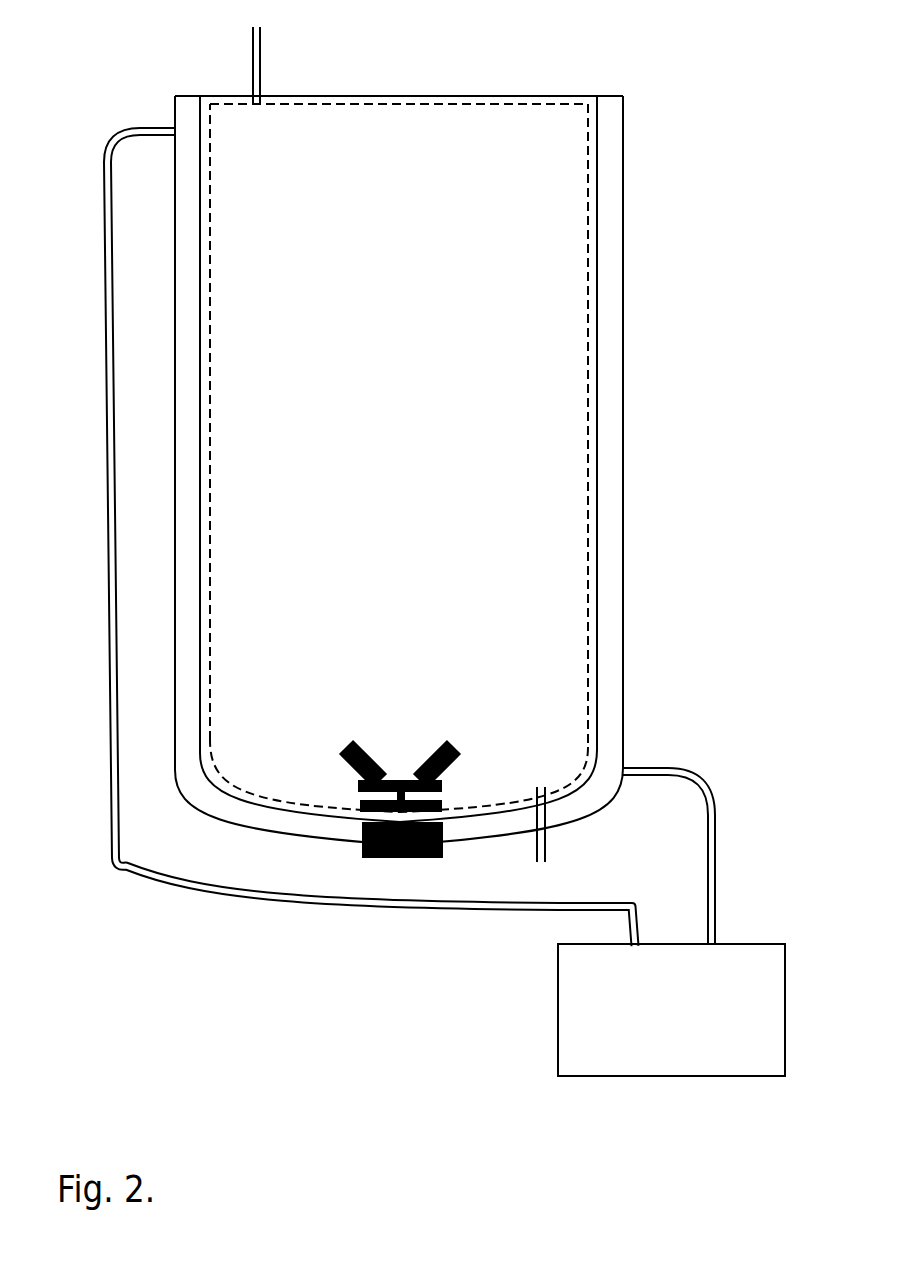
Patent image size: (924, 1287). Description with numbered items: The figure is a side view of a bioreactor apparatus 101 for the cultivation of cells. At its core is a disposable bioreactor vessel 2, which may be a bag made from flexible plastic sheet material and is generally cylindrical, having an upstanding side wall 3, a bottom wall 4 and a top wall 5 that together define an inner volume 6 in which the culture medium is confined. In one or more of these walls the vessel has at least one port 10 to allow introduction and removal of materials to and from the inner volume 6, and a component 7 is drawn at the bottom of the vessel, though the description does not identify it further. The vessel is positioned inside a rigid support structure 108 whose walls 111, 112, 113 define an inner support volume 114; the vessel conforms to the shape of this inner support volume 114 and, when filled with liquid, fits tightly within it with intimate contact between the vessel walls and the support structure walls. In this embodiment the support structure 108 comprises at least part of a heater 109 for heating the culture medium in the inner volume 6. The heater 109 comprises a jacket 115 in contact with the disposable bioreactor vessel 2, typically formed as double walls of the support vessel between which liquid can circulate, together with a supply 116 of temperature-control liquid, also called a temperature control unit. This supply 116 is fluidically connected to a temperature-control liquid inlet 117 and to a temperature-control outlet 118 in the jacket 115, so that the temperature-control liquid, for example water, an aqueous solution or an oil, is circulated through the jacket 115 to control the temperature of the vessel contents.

The disposable bioreactor vessel 2 is at (455, 439).
The side wall 3 is at (589, 607).
The bottom wall 4 is at (242, 780).
The top wall 5 is at (418, 100).
The inner volume 6 is at (399, 455).
The sensor 7 is at (408, 782).
The port 10 is at (258, 76).
The bioreactor apparatus 101 is at (744, 424).
The rigid support structure 108 is at (623, 298).
The heater 109 is at (607, 397).
The wall 111 is at (474, 449).
The wall 112 is at (293, 813).
The wall 113 is at (512, 96).
The inner support volume 114 is at (455, 439).
The jacket 115 is at (618, 517).
The supply of temperature-control liquid 116 is at (748, 943).
The temperature-control liquid inlet 117 is at (630, 760).
The temperature-control outlet 118 is at (174, 128).